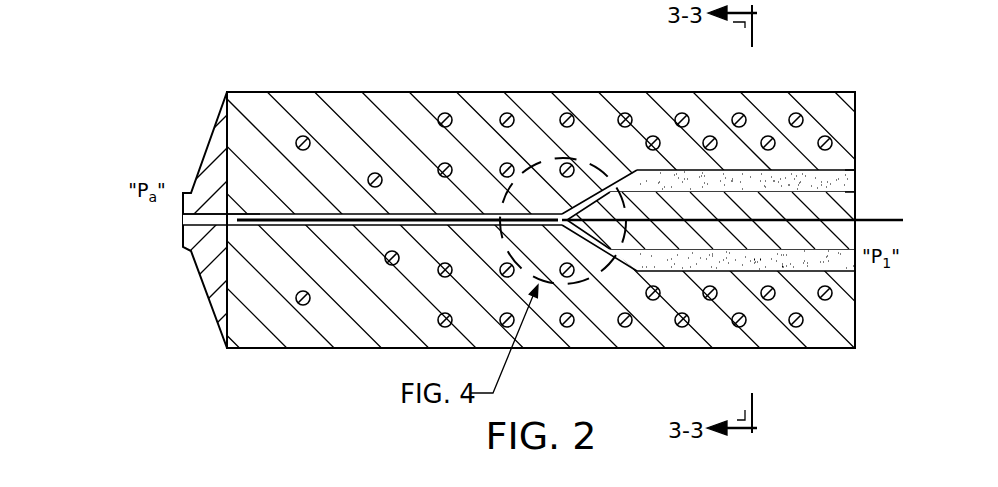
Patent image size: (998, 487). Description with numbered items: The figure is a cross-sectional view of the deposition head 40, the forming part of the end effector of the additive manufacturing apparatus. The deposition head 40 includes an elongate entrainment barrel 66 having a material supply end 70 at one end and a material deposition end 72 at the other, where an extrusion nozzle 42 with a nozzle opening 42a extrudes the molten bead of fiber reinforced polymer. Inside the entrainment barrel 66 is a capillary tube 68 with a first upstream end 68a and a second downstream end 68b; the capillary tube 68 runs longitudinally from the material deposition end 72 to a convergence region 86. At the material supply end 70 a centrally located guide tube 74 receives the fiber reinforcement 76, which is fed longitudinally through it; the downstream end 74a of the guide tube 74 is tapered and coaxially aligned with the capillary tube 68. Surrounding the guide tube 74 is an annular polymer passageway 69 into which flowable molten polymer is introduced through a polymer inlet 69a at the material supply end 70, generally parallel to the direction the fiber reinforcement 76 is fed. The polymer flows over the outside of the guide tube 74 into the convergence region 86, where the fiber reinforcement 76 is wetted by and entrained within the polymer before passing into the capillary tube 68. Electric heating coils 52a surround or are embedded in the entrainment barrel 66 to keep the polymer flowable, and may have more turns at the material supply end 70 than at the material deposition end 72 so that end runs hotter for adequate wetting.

The deposition head 40 is at (378, 58).
The extrusion nozzle 42 is at (205, 263).
The nozzle opening 42a is at (188, 221).
The electric heating coils 52a is at (302, 136).
The entrainment barrel 66 is at (438, 100).
The capillary tube 68 is at (310, 227).
The first upstream end of capillary tube 68a is at (527, 145).
The second downstream end of capillary tube 68b is at (240, 202).
The annular polymer passageway 69 is at (687, 180).
The polymer inlet 69a is at (842, 180).
The material supply end 70 is at (916, 104).
The material deposition end 72 is at (206, 201).
The guide tube 74 is at (843, 238).
The downstream end of guide tube 74a is at (585, 200).
The fiber reinforcement 76 is at (884, 216).
The convergence region 86 is at (540, 205).